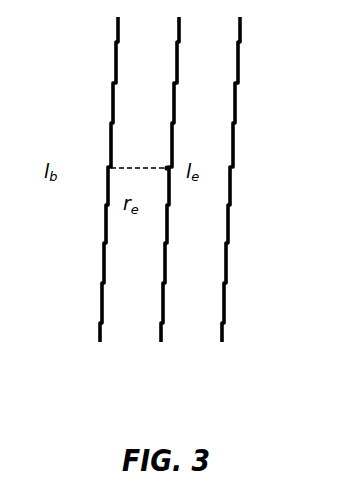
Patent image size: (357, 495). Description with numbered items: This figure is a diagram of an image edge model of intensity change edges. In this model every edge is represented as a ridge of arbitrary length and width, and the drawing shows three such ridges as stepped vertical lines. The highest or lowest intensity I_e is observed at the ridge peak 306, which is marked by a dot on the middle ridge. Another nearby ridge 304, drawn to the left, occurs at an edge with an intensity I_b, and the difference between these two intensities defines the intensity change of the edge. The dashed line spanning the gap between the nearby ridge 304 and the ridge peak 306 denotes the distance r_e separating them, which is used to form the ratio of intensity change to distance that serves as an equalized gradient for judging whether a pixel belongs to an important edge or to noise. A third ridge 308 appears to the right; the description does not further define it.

The nearby ridge 304 is at (102, 297).
The ridge peak 306 is at (162, 333).
The third conductive line 308 is at (235, 127).